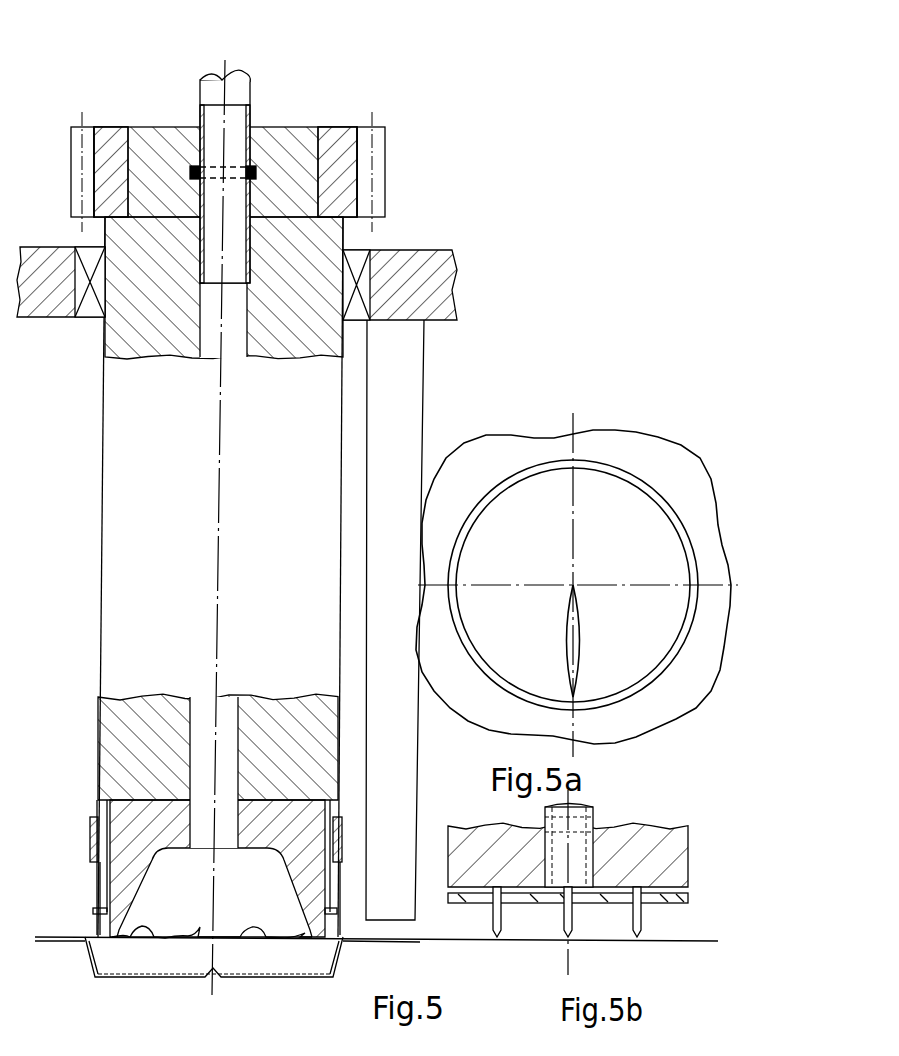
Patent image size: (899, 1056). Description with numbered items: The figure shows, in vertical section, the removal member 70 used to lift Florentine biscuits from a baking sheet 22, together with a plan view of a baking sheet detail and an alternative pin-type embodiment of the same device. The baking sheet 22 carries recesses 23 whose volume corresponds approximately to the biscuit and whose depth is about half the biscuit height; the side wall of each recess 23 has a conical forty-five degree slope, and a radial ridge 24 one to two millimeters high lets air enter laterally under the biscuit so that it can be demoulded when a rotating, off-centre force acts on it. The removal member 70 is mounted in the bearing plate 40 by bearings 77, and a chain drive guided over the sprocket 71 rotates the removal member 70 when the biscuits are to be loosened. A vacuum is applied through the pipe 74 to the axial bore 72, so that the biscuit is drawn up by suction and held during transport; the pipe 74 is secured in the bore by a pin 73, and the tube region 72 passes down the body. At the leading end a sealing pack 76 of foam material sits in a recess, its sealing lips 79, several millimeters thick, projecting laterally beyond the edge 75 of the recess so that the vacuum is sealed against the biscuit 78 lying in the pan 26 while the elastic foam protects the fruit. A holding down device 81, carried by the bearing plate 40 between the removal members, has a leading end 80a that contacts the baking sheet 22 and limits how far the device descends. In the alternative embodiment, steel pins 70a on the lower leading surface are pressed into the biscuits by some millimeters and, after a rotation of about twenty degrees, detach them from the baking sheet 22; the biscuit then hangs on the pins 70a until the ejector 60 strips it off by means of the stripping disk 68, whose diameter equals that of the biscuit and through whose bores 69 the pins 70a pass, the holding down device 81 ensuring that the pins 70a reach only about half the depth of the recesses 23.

In FIG. 5, the baking sheet 22 is at (47, 942).
In FIG. 5A, the baking sheet 22 is at (680, 508).
In FIG. 5, the recess 23 is at (318, 980).
In FIG. 5A, the recess 23 is at (613, 631).
In FIG. 5, the ridge 24 is at (215, 978).
In FIG. 5A, the ridge 24 is at (577, 663).
In FIG. 5, the pan 26 is at (113, 958).
In FIG. 5, the bearing plate 40 is at (385, 255).
In FIG. 5B, the ejector 60 is at (580, 823).
In FIG. 5B, the stripping disk 68 is at (680, 905).
In FIG. 5B, the bores 69 is at (640, 907).
In FIG. 5, the removal member 70 is at (125, 470).
In FIG. 5B, the removal member 70 is at (620, 840).
In FIG. 5B, the steel pins 70a is at (495, 924).
In FIG. 5, the sprocket 71 is at (365, 173).
In FIG. 5, the axial bore 72 is at (210, 322).
In FIG. 5, the pin 73 is at (252, 170).
In FIG. 5, the pipe 74 is at (213, 90).
In FIG. 5, the edge of the recess 75 is at (97, 897).
In FIG. 5, the sealing pack 76 is at (113, 883).
In FIG. 5, the bearings 77 is at (85, 308).
In FIG. 5, the product 78 is at (163, 908).
In FIG. 5, the sealing lips 79 is at (115, 937).
In FIG. 5, the rod end 80a is at (397, 918).
In FIG. 5, the holding down device 81 is at (404, 408).